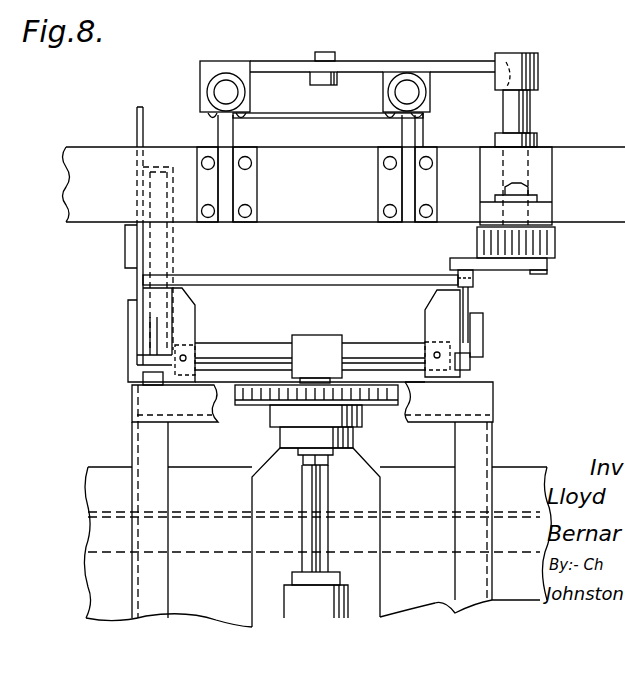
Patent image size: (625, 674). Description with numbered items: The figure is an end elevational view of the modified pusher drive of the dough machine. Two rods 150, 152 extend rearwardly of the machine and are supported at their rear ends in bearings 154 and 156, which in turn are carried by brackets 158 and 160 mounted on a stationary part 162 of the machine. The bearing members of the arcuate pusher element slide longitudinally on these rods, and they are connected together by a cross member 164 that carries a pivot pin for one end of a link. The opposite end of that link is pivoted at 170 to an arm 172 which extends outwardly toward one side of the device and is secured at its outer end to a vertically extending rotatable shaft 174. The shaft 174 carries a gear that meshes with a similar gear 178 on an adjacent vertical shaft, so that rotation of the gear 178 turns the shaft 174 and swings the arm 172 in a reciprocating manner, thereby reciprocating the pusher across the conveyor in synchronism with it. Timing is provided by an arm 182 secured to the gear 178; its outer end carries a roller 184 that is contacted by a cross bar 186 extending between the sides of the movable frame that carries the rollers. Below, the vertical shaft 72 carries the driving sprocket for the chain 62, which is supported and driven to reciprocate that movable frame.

The chain 62 is at (251, 402).
The vertical shaft 72 is at (302, 495).
The rod 150 is at (408, 80).
The rod 152 is at (227, 75).
The bearing 154 is at (430, 96).
The bearing 156 is at (200, 79).
The bracket 158 is at (402, 130).
The bracket 160 is at (235, 136).
The stationary part 162 is at (324, 214).
The cross member 164 is at (281, 60).
The pivot 170 is at (336, 53).
The arm 172 is at (483, 56).
The vertically extending rotatable shaft 174 is at (531, 105).
The gear 178 is at (556, 249).
The arm 182 is at (510, 266).
The roller 184 is at (460, 271).
The cross bar 186 is at (265, 275).